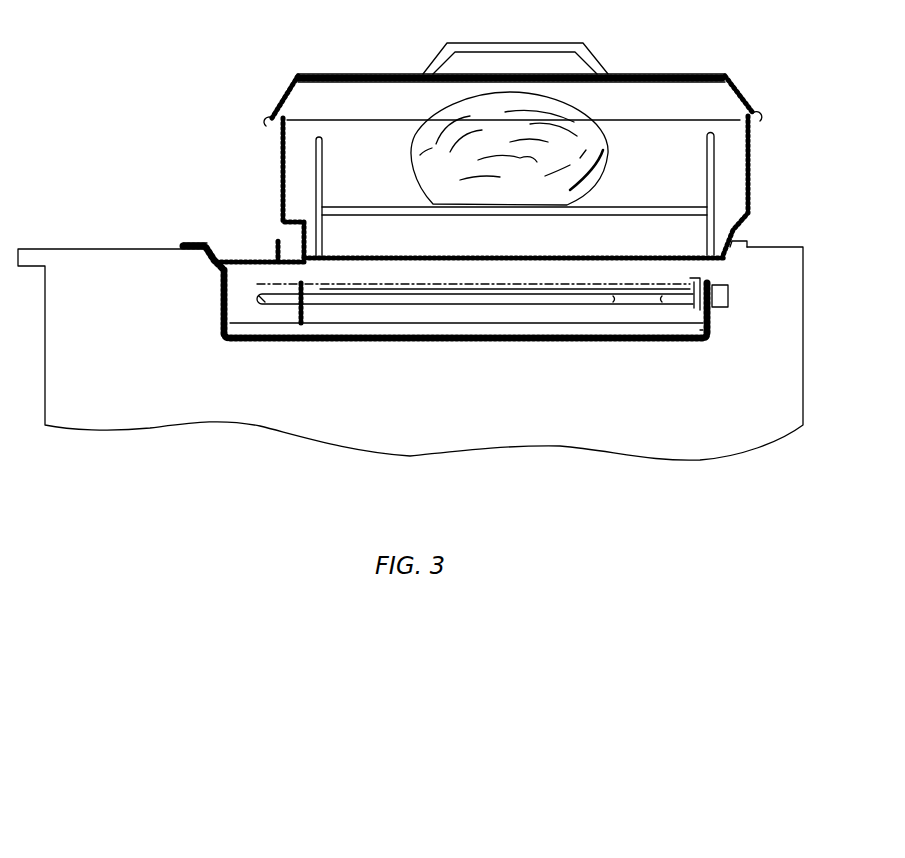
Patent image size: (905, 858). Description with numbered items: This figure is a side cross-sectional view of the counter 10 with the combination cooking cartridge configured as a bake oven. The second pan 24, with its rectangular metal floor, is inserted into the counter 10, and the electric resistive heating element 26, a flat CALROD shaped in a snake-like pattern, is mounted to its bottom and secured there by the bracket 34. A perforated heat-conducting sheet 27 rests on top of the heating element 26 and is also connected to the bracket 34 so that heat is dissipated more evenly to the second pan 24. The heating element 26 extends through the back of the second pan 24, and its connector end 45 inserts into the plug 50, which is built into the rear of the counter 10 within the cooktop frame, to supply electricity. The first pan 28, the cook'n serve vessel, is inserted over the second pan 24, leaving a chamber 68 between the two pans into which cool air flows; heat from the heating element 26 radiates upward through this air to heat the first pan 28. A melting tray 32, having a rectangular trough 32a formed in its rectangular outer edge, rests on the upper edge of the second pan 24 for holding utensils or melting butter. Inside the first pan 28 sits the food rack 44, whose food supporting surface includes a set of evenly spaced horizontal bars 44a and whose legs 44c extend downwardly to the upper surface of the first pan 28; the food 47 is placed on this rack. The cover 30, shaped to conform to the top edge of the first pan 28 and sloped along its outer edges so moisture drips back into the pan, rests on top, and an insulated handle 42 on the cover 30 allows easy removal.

The counter 10 is at (765, 247).
The second pan 24 is at (228, 331).
The heating element 26 is at (480, 294).
The sheet 27 is at (423, 285).
The first pan 28 is at (280, 150).
The cover 30 is at (748, 80).
The melting tray 32 is at (193, 244).
The trough 32a is at (252, 258).
The bracket 34 is at (307, 320).
The insulated handle 42 is at (517, 43).
The food rack 44 is at (515, 196).
The horizontal bars 44a is at (622, 215).
The legs 44c is at (323, 231).
The connector end 45 is at (703, 322).
The food 47 is at (573, 112).
The plug 50 is at (730, 283).
The chamber 68 is at (543, 278).